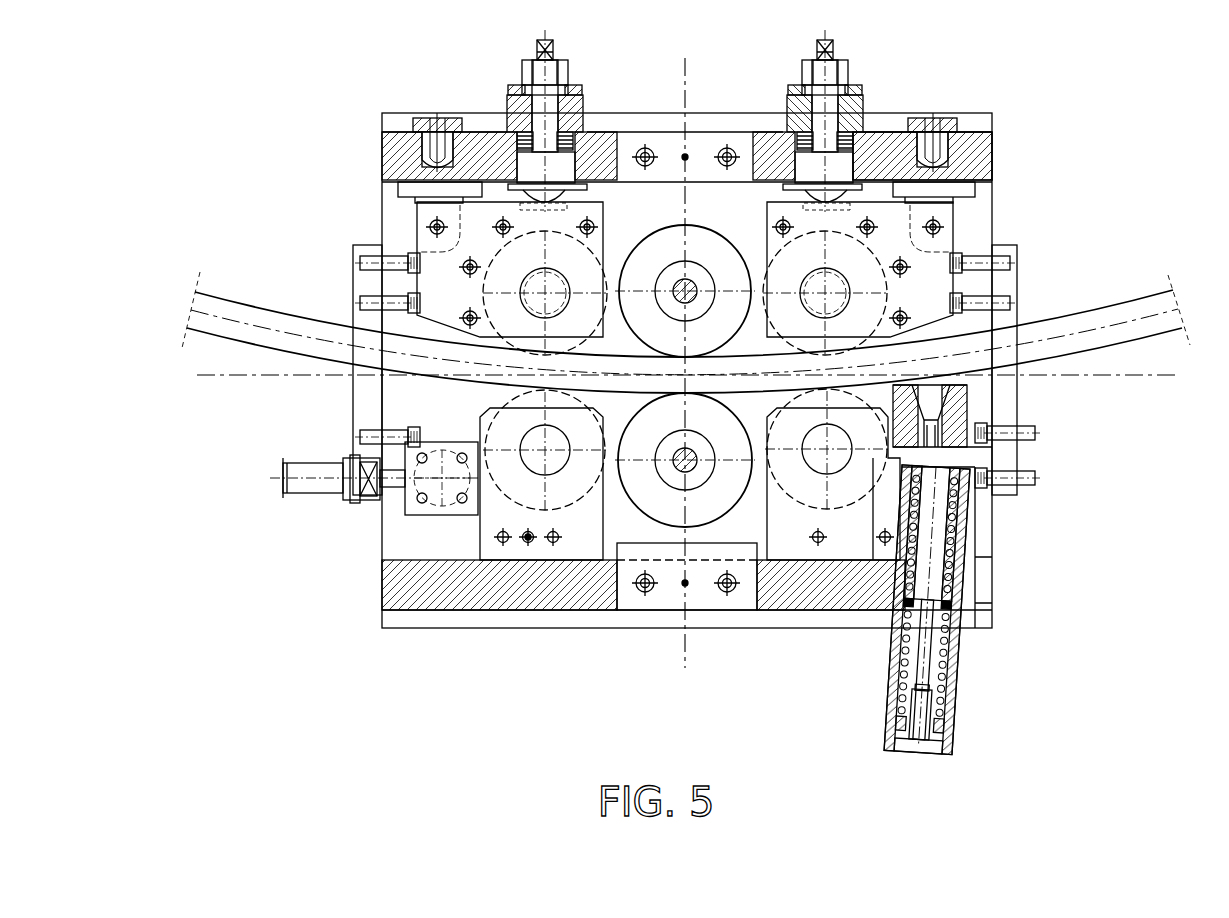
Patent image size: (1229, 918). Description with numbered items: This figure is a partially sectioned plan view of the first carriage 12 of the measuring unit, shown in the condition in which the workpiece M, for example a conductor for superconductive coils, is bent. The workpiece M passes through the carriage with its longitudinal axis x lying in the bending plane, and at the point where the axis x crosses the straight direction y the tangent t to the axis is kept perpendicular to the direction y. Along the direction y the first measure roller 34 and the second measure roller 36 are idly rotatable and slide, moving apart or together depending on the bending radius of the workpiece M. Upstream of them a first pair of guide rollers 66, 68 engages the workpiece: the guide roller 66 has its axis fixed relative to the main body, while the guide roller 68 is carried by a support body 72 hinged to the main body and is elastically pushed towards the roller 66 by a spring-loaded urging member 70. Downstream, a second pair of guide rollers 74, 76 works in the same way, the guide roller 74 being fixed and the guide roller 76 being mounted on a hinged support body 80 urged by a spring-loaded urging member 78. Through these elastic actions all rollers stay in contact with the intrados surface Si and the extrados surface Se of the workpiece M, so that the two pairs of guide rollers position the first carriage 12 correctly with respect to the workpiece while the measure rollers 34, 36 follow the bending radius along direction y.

The first carriage 12 is at (564, 636).
The first measure roller 34 is at (722, 232).
The second measure roller 36 is at (686, 528).
The guide roller 66 is at (481, 496).
The guide roller 68 is at (487, 222).
The spring-loaded urging member 70 is at (592, 188).
The support body 72 is at (604, 218).
The guide roller 74 is at (880, 440).
The guide roller 76 is at (888, 300).
The spring-loaded urging member 78 is at (887, 185).
The support body 80 is at (781, 197).
The tangent t is at (241, 378).
The axis of the workpiece x is at (1142, 318).
The straight direction y is at (685, 648).
The intrados surface Si is at (1050, 316).
The extrados surface Se is at (1080, 356).
The workpiece M is at (1155, 340).